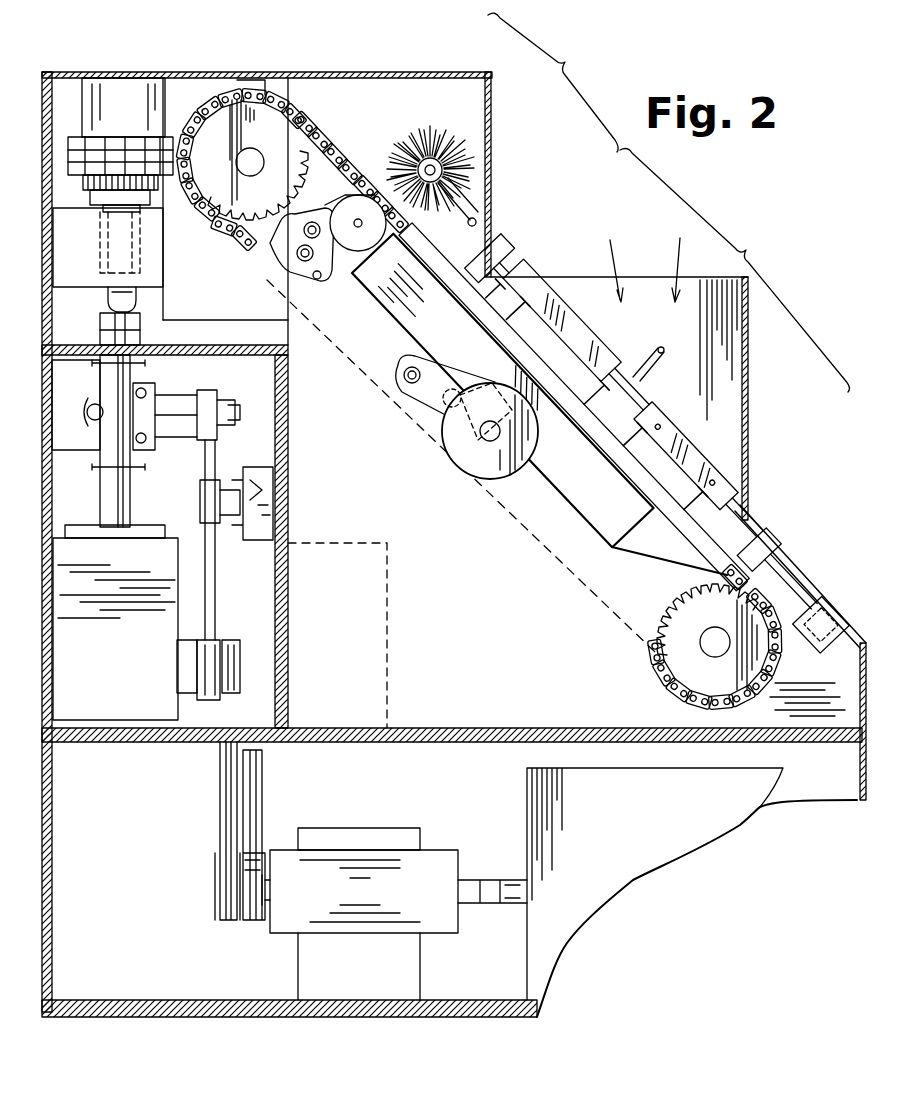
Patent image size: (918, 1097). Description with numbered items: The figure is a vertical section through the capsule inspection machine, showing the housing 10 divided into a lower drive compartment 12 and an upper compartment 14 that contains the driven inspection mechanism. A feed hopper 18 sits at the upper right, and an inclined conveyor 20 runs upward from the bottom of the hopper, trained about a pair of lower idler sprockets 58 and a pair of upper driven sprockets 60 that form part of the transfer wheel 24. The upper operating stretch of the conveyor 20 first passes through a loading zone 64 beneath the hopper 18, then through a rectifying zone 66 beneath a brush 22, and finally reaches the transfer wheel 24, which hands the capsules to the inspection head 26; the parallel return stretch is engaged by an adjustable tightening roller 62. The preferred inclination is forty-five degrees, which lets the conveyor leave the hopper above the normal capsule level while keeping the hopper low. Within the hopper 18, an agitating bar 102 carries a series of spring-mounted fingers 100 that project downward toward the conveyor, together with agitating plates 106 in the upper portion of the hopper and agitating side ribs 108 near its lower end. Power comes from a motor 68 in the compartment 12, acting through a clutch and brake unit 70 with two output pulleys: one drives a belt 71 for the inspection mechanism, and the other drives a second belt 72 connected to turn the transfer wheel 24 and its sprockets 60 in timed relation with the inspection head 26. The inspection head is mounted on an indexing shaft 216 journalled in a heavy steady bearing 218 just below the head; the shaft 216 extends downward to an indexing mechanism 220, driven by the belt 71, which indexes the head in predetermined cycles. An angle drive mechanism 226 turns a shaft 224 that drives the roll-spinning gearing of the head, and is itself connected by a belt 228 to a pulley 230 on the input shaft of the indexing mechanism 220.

The housing 10 is at (790, 585).
The lower drive compartment 12 is at (118, 840).
The upper compartment 14 is at (382, 500).
The feed hopper 18 is at (748, 345).
The conveyor 20 is at (344, 126).
The brush 22 is at (468, 150).
The transfer wheel 24 is at (253, 140).
The inspection head 26 is at (117, 130).
The lower idler sprockets 58 is at (658, 618).
The upper driven sprockets 60 is at (248, 207).
The adjustable tightening roller 62 is at (498, 470).
The loading zone 64 is at (734, 270).
The rectifying zone 66 is at (553, 82).
The motor 68 is at (620, 848).
The clutch and brake unit 70 is at (392, 872).
The belt 71 is at (228, 796).
The second belt 72 is at (262, 787).
The spring-mounted fingers 100 is at (685, 454).
The agitating bar 102 is at (543, 315).
The agitating plates 106 is at (648, 365).
The agitating side ribs 108 is at (793, 590).
The indexing shaft 216 is at (110, 290).
The steady bearing 218 is at (95, 260).
The indexing mechanism 220 is at (120, 658).
The shaft 224 is at (140, 333).
The angle drive mechanism 226 is at (152, 386).
The belt 228 is at (215, 590).
The pulley 230 is at (200, 688).